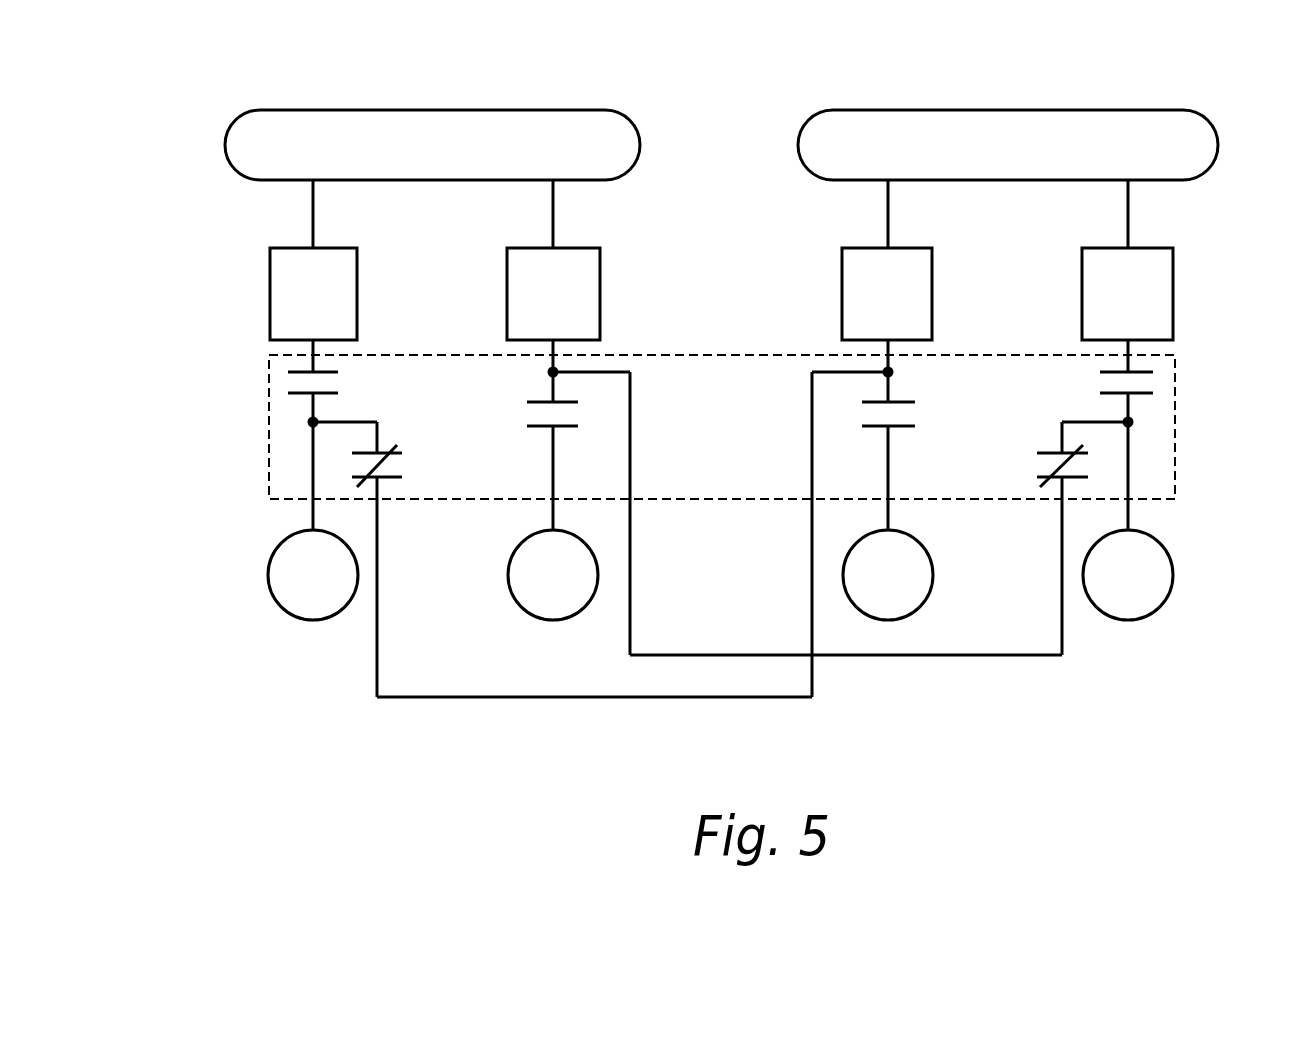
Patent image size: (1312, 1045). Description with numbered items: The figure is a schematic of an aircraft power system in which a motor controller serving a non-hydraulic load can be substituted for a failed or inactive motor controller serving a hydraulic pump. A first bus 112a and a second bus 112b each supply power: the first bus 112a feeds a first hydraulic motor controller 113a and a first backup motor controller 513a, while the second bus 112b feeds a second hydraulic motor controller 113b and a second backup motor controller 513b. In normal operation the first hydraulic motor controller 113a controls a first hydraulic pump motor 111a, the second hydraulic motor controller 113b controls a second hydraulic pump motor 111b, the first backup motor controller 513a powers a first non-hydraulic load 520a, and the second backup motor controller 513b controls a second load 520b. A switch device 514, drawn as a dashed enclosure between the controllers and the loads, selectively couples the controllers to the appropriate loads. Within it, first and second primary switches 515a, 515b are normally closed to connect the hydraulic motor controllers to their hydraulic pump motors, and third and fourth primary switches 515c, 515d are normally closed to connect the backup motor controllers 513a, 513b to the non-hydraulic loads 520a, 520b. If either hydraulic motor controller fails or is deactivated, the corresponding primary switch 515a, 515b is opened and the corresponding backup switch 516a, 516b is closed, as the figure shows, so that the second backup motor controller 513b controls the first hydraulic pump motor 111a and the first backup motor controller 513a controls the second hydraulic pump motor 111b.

The first bus 112a is at (432, 126).
The second bus 112b is at (1008, 126).
The first hydraulic motor controller 113a is at (252, 272).
The second hydraulic motor controller 113b is at (1096, 272).
The first backup motor controller 513a is at (520, 272).
The second backup motor controller 513b is at (824, 272).
The switch device 514 is at (779, 427).
The first primary switch 515a is at (270, 391).
The second primary switch 515b is at (1170, 394).
The third primary switch 515c is at (510, 404).
The fourth primary switch 515d is at (930, 406).
The first backup switch 516a is at (419, 461).
The second backup switch 516b is at (1021, 461).
The first hydraulic pump motor 111a is at (268, 610).
The second hydraulic pump motor 111b is at (1172, 610).
The first non-hydraulic load 520a is at (498, 596).
The second non-hydraulic load 520b is at (891, 574).